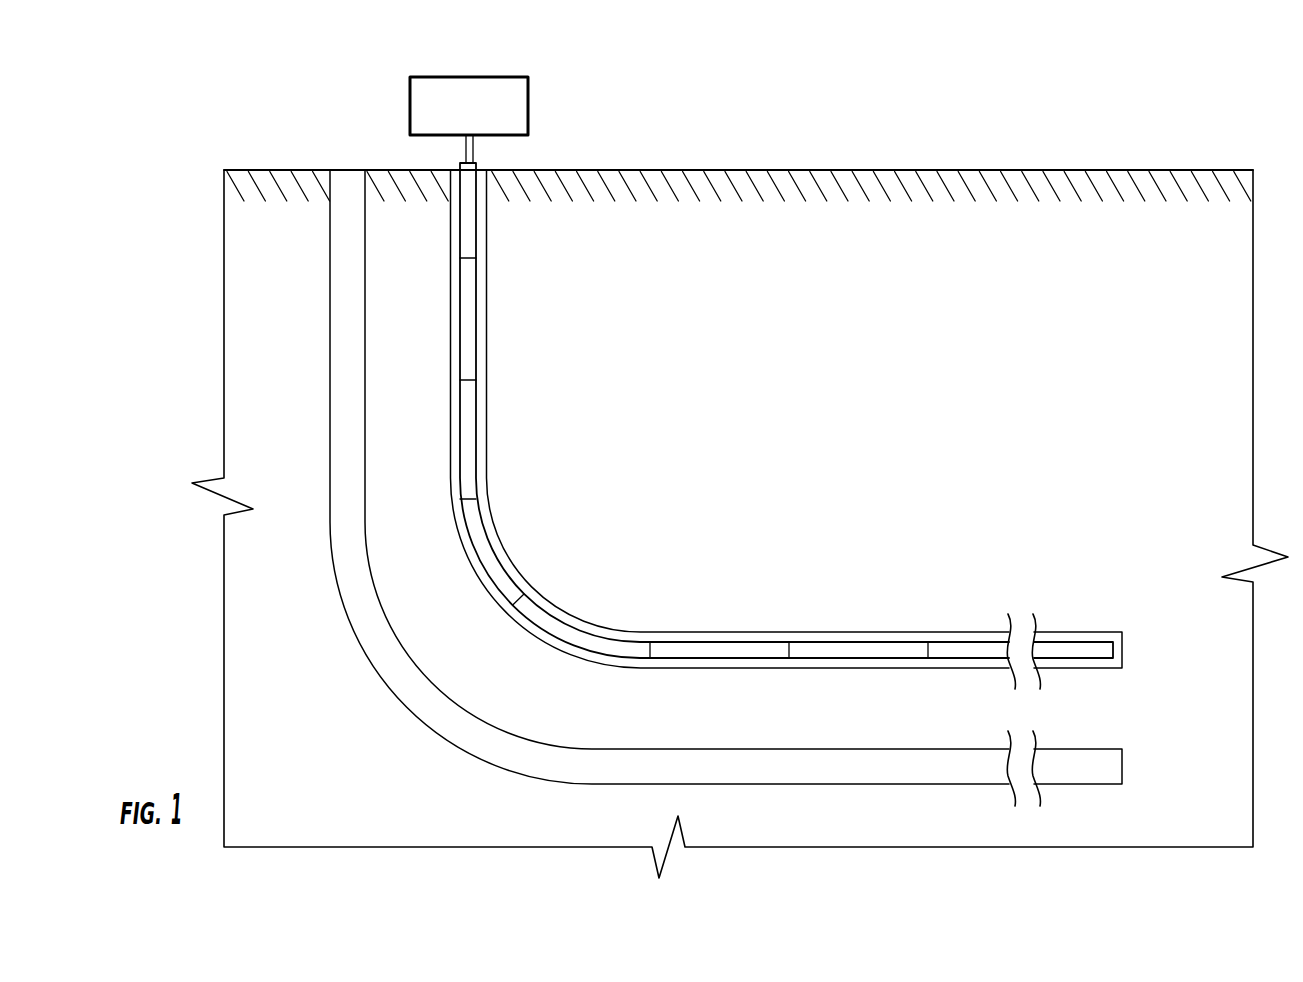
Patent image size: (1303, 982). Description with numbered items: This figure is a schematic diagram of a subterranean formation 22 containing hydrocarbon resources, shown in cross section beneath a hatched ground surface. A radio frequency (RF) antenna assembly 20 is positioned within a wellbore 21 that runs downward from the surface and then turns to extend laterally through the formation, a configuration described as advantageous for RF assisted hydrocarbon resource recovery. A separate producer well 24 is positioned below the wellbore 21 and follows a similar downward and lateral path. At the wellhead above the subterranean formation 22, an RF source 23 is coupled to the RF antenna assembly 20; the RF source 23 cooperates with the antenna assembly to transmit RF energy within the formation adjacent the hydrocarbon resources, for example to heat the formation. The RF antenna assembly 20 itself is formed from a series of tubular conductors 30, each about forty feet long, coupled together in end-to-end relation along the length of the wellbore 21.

The radio frequency (RF) antenna assembly 20 is at (525, 262).
The wellbore 21 is at (482, 168).
The subterranean formation 22 is at (728, 235).
The RF source 23 is at (528, 97).
The producer well 24 is at (348, 183).
The tubular conductors 30 is at (460, 306).